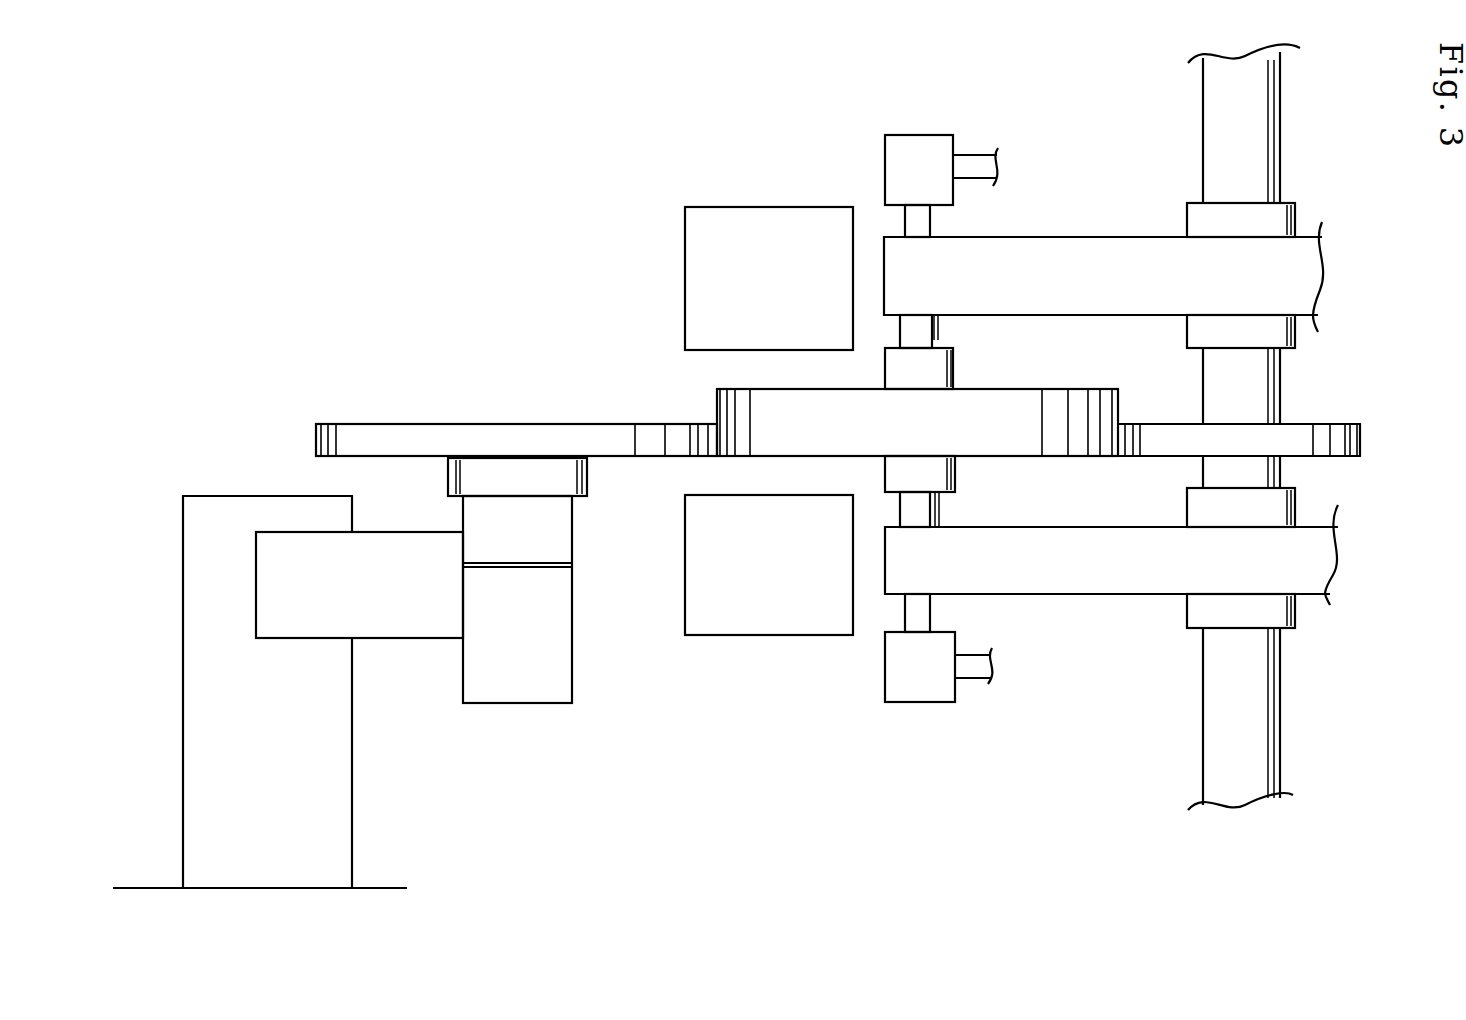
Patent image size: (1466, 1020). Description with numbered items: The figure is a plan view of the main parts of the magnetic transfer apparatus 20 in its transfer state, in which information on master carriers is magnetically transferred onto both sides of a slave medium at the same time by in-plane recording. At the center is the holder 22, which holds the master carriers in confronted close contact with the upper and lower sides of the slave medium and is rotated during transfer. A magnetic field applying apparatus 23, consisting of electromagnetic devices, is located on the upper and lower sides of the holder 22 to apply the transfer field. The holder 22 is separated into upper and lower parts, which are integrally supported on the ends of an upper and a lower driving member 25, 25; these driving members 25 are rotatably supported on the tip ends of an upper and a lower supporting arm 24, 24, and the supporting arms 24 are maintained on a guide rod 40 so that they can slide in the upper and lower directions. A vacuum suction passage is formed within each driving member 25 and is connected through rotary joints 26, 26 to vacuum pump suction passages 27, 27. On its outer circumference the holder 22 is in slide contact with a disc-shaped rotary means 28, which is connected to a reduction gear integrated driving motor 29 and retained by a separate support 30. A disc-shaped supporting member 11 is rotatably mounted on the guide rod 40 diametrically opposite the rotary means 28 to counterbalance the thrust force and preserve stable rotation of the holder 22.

The magnetic transfer apparatus 20 is at (366, 139).
The supporting member 11 is at (1327, 418).
The holder 22 is at (718, 405).
The magnetic field applying apparatus 23 is at (790, 216).
The supporting arm 24 is at (1067, 247).
The driving member 25 is at (937, 335).
The rotary joint 26 is at (917, 133).
The vacuum pump suction passage 27 is at (972, 163).
The rotary means 28 is at (437, 432).
The reduction gear integrated driving motor 29 is at (518, 693).
The support 30 is at (343, 792).
The guide rod 40 is at (1272, 122).